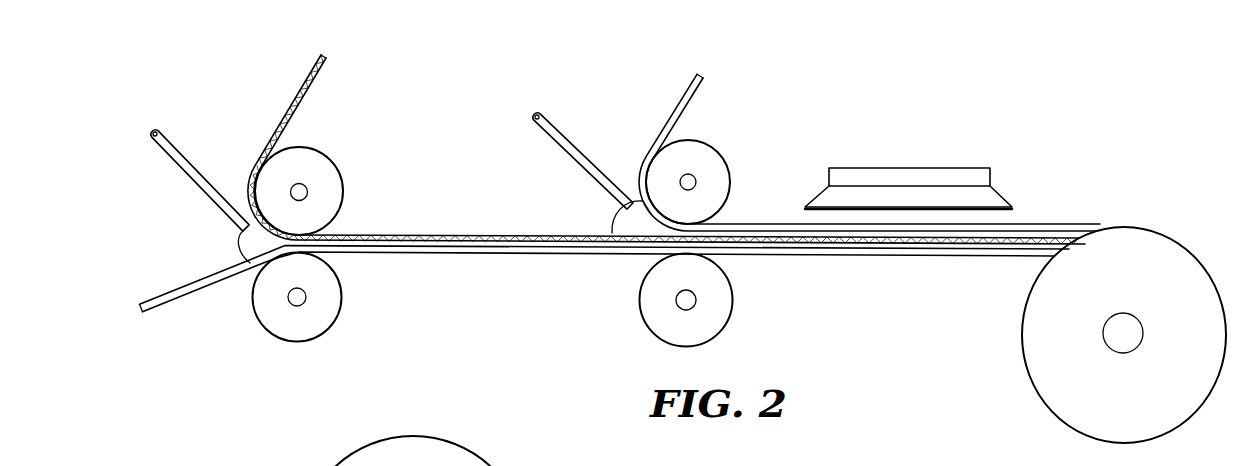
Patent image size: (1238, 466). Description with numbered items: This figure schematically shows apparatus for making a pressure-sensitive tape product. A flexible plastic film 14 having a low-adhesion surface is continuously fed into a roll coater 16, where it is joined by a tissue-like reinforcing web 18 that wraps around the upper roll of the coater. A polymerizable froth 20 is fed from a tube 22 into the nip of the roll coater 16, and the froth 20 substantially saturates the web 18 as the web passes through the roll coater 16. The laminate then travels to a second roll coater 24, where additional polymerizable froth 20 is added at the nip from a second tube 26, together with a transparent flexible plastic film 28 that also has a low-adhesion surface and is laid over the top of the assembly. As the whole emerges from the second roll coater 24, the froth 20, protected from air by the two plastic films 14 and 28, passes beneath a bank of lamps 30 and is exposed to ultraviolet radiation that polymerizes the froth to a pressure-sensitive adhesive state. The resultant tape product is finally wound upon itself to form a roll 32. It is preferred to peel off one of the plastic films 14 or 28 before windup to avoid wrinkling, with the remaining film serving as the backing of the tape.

The flexible plastic film 14 is at (182, 292).
The roll coater 16 is at (300, 347).
The tissue-like reinforcing web 18 is at (320, 78).
The polymerizable froth 20 is at (243, 247).
The tube 22 is at (183, 163).
The second roll coater 24 is at (741, 302).
The second tube 26 is at (563, 133).
The transparent flexible plastic film 28 is at (687, 85).
The bank of lamps 30 is at (995, 190).
The roll 32 is at (1038, 378).